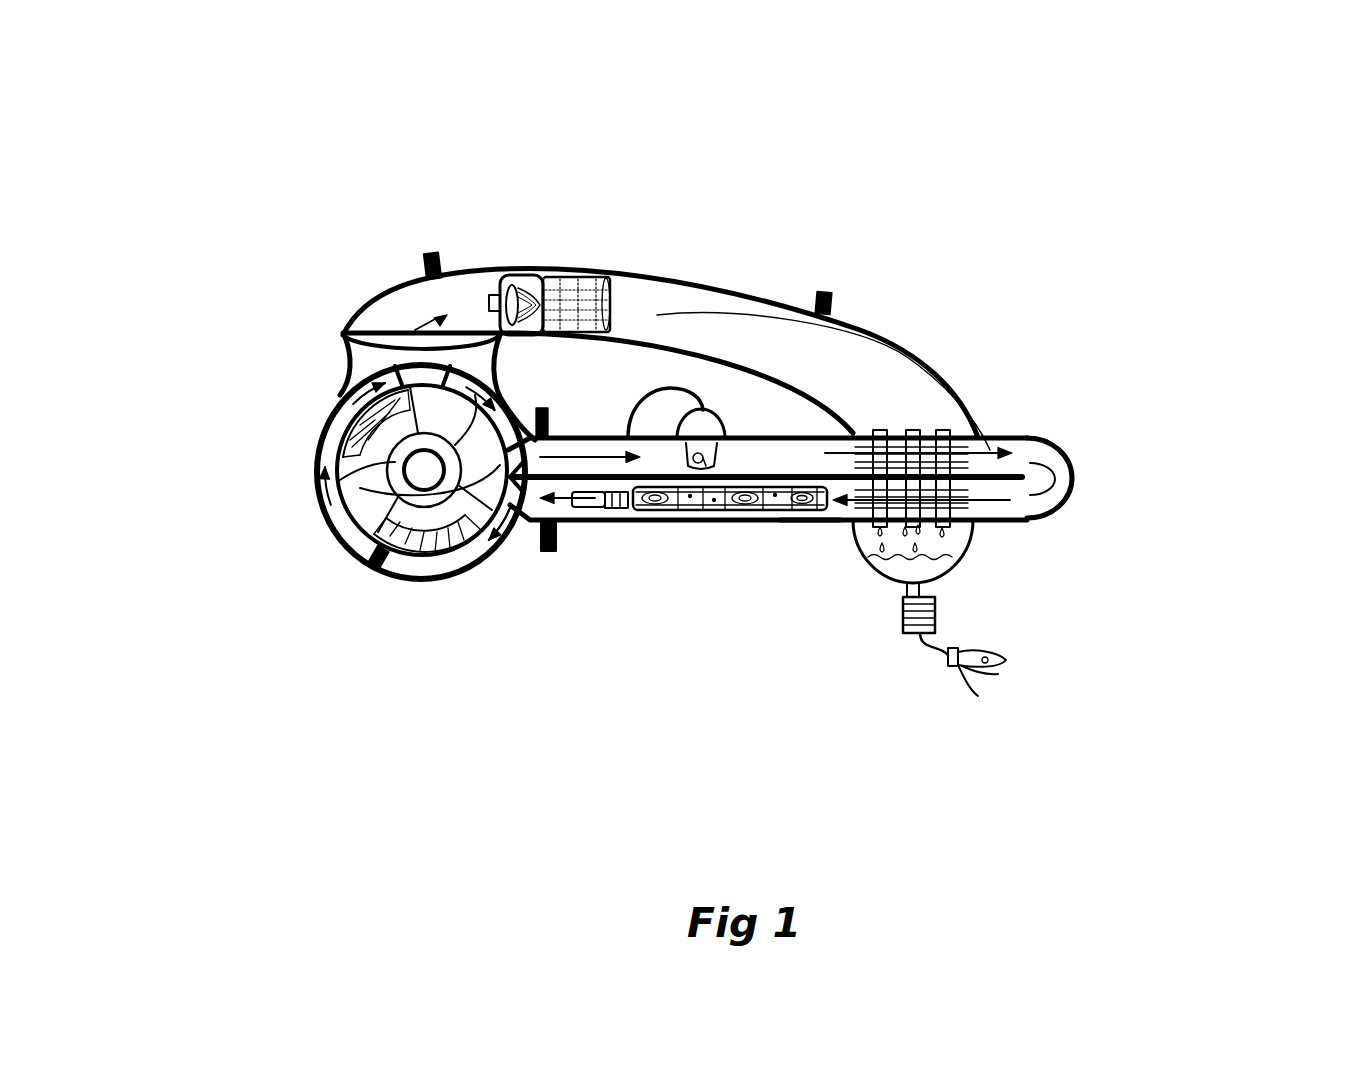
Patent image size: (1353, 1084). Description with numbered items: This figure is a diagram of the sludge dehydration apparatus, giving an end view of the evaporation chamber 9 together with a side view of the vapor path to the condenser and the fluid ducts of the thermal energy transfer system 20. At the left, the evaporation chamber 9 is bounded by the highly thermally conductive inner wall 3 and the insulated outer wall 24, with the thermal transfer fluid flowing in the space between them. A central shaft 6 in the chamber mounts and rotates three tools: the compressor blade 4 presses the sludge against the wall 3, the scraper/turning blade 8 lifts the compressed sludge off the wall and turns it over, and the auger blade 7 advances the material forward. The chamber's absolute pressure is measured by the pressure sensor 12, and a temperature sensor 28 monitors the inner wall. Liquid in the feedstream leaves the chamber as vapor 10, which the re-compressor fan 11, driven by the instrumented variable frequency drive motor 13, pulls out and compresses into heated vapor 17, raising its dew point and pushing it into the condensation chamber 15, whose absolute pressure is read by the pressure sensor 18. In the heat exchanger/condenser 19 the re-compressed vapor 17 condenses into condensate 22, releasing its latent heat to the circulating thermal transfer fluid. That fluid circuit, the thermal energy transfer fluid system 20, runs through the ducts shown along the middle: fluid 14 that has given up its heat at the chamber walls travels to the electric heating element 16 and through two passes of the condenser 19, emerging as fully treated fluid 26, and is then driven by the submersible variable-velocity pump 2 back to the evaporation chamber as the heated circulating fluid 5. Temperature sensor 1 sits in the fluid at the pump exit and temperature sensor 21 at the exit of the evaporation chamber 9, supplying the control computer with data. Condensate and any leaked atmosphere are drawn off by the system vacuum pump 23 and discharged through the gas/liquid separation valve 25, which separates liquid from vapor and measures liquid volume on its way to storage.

The temperature sensor 1 is at (562, 538).
The submersible thermal energy transfer fluid pump 2 is at (743, 513).
The thermally conductive inner wall 3 is at (463, 552).
The compressor blade 4 is at (543, 557).
The circulating thermal energy transfer fluid 5 is at (505, 540).
The central shaft 6 is at (420, 472).
The auger blade 7 is at (417, 545).
The scraper/turning blade 8 is at (323, 430).
The evaporation chamber 9 is at (331, 398).
The vapor 10 is at (415, 417).
The re-compressor fan 11 is at (520, 280).
The pressure sensor 12 is at (428, 255).
The variable frequency drive motor 13 is at (600, 278).
The thermal transfer fluid 14 is at (560, 455).
The condensation chamber 15 is at (680, 282).
The electric heating element 16 is at (720, 408).
The re-compressed vapor 17 is at (913, 420).
The pressure sensor 18 is at (825, 293).
The heat exchanger/condenser 19 is at (972, 442).
The thermal energy transfer fluid system 20 is at (1067, 477).
The temperature sensor 21 is at (545, 408).
The condensate 22 is at (968, 560).
The system vacuum pump 23 is at (943, 604).
The insulated outer wall 24 is at (347, 436).
The gas/liquid separation valve 25 is at (940, 665).
The fully treated thermal transfer fluid 26 is at (838, 523).
The temperature sensor 28 is at (362, 560).